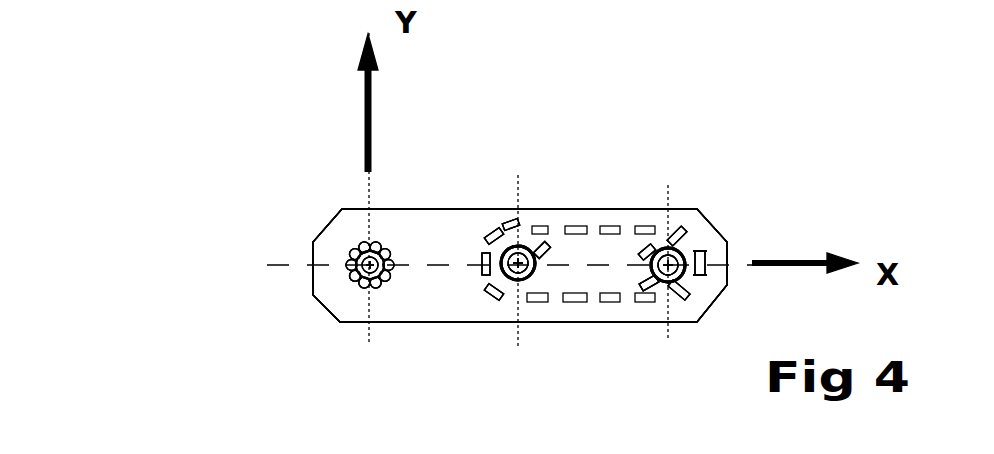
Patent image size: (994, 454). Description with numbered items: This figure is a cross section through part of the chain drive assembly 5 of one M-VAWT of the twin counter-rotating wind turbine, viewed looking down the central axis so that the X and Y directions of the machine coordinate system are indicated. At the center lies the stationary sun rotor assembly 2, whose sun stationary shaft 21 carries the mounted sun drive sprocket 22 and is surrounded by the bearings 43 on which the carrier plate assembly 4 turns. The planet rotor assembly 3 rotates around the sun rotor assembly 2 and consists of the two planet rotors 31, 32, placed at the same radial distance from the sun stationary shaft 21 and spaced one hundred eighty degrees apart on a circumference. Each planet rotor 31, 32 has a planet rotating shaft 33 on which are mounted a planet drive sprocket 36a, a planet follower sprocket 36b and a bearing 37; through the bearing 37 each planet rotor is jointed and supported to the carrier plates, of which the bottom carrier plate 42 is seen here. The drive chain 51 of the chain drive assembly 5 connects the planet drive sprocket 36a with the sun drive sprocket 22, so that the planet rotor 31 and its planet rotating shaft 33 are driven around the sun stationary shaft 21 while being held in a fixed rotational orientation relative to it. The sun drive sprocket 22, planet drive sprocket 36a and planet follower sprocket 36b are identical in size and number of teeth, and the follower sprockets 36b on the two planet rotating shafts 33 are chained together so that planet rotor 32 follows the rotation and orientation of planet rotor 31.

The sun rotor assembly 2 is at (153, 123).
The planet rotor assembly 3 is at (377, 202).
The carrier plate assembly 4 is at (377, 222).
The chain drive assembly 5 is at (377, 239).
The sun stationary shaft 21 is at (518, 263).
The sun drive sprocket 22 is at (564, 168).
The planet rotor 31 is at (668, 265).
The planet rotor 32 is at (370, 265).
The planet rotating shaft 33 is at (522, 200).
The planet drive sprocket 36a is at (540, 242).
The planet follower sprocket 36b is at (350, 282).
The bearing 37 is at (522, 218).
The bottom carrier plate 42 is at (312, 265).
The bearing 43 is at (564, 186).
The drive chain 51 is at (540, 297).